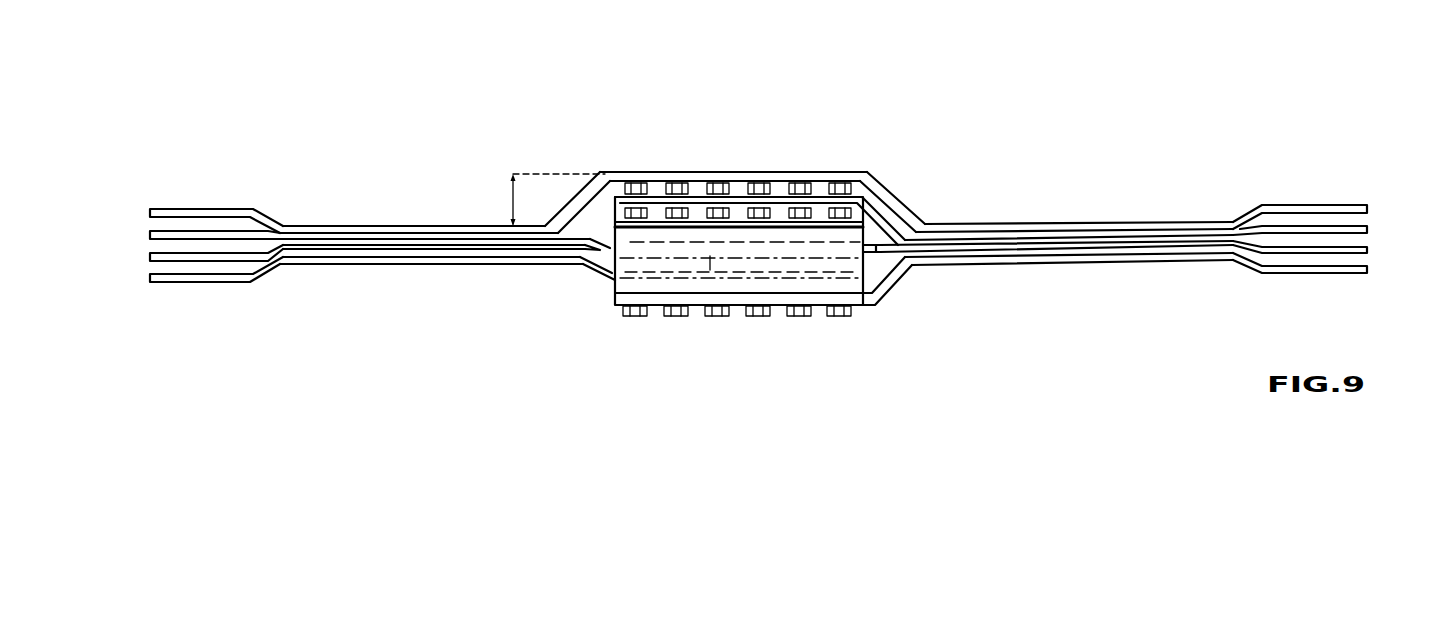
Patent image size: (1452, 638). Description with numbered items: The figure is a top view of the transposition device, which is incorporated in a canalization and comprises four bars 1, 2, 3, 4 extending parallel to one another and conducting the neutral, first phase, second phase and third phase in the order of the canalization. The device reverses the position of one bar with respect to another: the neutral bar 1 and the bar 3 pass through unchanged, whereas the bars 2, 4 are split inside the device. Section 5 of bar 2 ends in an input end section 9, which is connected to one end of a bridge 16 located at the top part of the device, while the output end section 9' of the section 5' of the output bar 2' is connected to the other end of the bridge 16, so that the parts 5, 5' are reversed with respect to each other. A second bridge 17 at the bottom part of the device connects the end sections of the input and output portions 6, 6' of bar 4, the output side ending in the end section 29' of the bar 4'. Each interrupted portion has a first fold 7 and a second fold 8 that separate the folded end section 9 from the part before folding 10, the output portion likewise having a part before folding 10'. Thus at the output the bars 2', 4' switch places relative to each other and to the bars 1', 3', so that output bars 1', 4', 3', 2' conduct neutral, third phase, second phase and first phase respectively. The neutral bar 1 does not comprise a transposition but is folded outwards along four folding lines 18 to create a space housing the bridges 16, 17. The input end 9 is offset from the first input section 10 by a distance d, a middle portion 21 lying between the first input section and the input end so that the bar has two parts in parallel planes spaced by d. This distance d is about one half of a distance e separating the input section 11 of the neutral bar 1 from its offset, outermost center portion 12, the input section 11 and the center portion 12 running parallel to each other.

The neutral bar 1 is at (200, 178).
The bar to be transposed 2 is at (184, 235).
The bar 3 is at (196, 296).
The bar to be transposed 4 is at (216, 315).
The input portion of bar 2 5 is at (363, 178).
The input portion of bar 4 6 is at (340, 315).
The first fold 7 is at (548, 230).
The second fold 8 is at (582, 237).
The input end section 9 is at (760, 154).
The first input section 10 is at (467, 195).
The input section of neutral bar 11 is at (330, 225).
The offset portion of neutral bar 12 is at (664, 172).
The first bridge 16 is at (823, 262).
The second bridge 17 is at (716, 208).
The folding lines 18 is at (872, 170).
The middle portion 21 is at (606, 264).
The end section of bar 4' 29' is at (738, 124).
The output end section 9' is at (767, 337).
The part before folding of output portion 10' is at (1056, 293).
The output neutral bar 1' is at (1331, 177).
The output bar 2' is at (1334, 291).
The output bar 3' is at (1331, 259).
The output bar 4' is at (1331, 218).
The output portion of bar 2' 5' is at (1186, 292).
The output portion of bar 4' 6' is at (1171, 182).
The distance d is at (708, 266).
The distance e is at (558, 200).